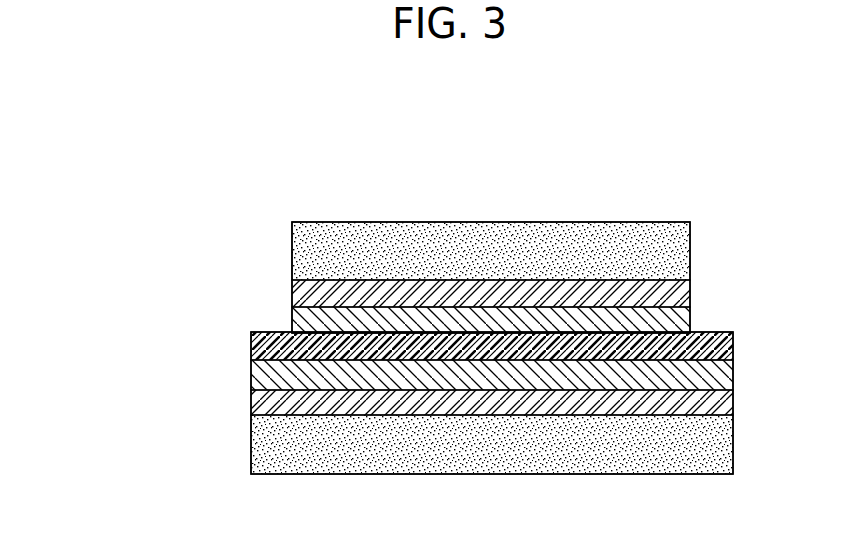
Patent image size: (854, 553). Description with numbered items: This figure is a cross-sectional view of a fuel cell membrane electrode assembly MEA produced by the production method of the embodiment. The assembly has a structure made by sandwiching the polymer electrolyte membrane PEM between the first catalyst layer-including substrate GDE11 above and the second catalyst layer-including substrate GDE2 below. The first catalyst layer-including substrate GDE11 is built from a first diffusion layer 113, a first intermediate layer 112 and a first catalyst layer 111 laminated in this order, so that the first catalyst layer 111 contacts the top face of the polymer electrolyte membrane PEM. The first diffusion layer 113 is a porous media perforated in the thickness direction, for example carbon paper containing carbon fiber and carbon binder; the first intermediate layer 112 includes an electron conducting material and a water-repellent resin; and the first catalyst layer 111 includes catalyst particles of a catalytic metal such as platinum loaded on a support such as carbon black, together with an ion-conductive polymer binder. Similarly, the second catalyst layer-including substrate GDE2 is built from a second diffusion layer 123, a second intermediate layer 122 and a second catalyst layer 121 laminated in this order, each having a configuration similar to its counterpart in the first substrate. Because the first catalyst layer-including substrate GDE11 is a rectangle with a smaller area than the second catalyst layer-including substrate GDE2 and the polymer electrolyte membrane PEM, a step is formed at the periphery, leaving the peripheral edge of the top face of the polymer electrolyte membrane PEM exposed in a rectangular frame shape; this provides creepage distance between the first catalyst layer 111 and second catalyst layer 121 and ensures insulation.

The fuel cell membrane electrode assembly MEA is at (738, 147).
The first catalyst layer-including substrate GDE11 is at (167, 225).
The first diffusion layer 113 is at (306, 248).
The first intermediate layer 112 is at (305, 293).
The first catalyst layer 111 is at (305, 321).
The polymer electrolyte membrane PEM is at (250, 343).
The second catalyst layer-including substrate GDE2 is at (118, 373).
The second catalyst layer 121 is at (250, 370).
The second intermediate layer 122 is at (250, 404).
The second diffusion layer 123 is at (250, 440).